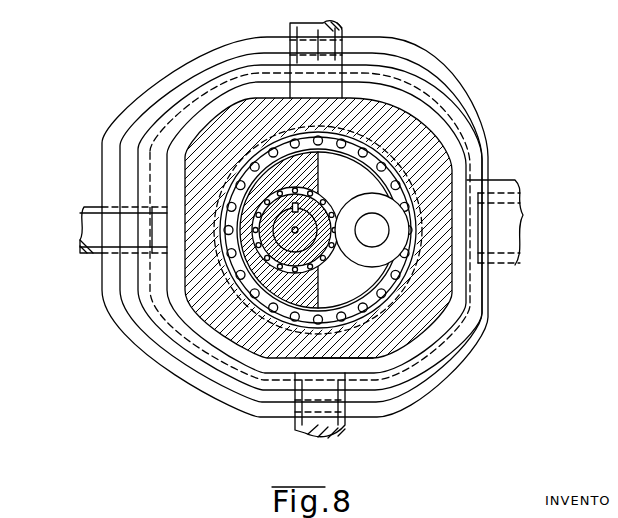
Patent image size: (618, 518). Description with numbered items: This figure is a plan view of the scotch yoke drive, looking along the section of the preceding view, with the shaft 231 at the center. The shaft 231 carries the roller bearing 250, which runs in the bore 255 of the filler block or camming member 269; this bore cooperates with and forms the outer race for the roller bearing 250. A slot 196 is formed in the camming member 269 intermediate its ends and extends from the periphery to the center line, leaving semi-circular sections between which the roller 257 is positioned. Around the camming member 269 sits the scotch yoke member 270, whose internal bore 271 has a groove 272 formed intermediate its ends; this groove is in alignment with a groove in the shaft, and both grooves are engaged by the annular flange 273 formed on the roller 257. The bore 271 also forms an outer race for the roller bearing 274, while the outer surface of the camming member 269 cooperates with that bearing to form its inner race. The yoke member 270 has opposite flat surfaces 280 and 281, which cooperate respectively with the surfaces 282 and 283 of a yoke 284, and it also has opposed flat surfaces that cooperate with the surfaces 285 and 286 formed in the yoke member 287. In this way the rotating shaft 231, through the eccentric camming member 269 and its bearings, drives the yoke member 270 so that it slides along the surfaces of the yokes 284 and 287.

The slot 196 is at (384, 164).
The shaft 231 is at (240, 263).
The roller bearing 250 is at (326, 266).
The bore 255 is at (272, 276).
The roller 257 is at (398, 275).
The filler block or camming member 269 is at (255, 290).
The scotch yoke member 270 is at (410, 132).
The internal bore 271 is at (243, 164).
The groove 272 is at (425, 289).
The annular flange 273 is at (346, 197).
The roller bearing 274 is at (399, 184).
The flat surface 280 is at (343, 100).
The flat surface 281 is at (362, 360).
The surface 282 is at (230, 100).
The surface 283 is at (243, 356).
The yoke 284 is at (140, 337).
The surface 285 is at (190, 143).
The surface 286 is at (488, 292).
The yoke member 287 is at (474, 354).